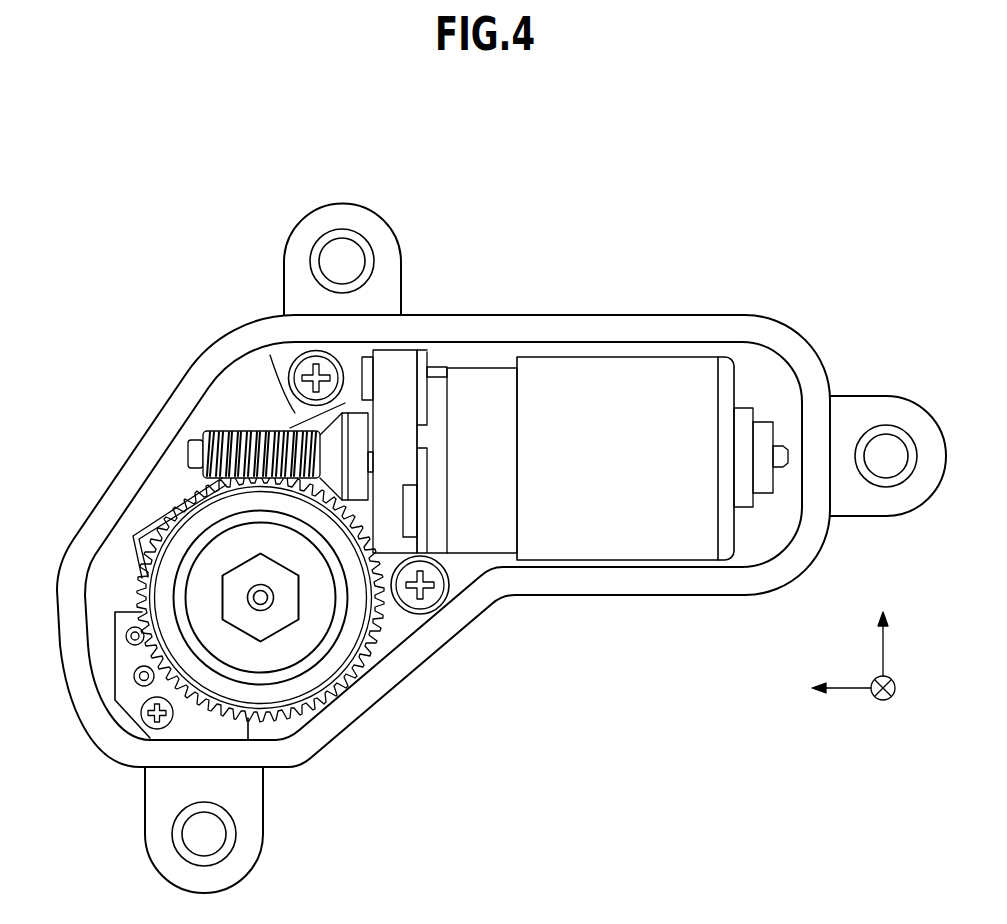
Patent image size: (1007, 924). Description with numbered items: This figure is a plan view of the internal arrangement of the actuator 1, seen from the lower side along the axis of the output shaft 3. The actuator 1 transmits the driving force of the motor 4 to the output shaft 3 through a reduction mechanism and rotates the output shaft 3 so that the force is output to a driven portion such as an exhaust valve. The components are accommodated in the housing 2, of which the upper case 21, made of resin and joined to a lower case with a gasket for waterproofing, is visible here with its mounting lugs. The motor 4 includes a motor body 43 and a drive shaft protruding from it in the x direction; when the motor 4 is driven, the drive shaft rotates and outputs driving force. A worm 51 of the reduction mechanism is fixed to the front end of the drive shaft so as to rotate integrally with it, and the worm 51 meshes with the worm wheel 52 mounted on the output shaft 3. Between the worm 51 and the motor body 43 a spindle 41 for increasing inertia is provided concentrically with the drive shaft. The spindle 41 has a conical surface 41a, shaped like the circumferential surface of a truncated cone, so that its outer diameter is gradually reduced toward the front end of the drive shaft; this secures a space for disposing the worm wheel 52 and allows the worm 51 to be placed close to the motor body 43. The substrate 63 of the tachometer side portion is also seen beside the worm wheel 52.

The actuator 1 is at (104, 270).
The housing 2 is at (501, 549).
The upper case 21 is at (722, 313).
The output shaft 3 is at (277, 617).
The motor 4 is at (577, 330).
The spindle 41 is at (356, 420).
The conical surface 41a is at (289, 422).
The motor body 43 is at (645, 400).
The worm 51 is at (238, 413).
The worm wheel 52 is at (360, 677).
The substrate 63 is at (118, 683).